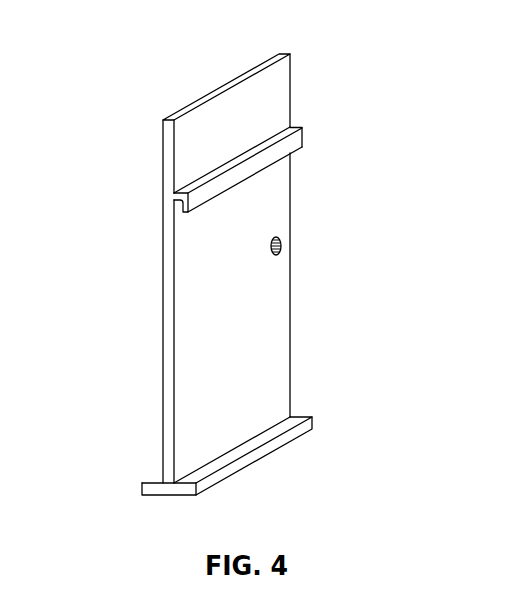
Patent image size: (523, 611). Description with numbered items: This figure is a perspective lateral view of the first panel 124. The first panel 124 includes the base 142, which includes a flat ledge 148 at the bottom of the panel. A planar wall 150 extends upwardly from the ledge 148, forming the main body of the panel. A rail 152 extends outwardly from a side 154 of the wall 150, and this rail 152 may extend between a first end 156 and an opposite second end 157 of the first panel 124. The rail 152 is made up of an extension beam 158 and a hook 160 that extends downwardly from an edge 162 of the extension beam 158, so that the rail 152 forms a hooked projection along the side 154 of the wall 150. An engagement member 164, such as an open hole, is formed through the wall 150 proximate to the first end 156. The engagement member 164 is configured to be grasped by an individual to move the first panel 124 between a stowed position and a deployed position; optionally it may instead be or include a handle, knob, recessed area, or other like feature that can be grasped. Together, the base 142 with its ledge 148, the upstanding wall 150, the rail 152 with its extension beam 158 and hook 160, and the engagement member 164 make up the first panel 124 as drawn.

The first panel 124 is at (144, 99).
The base 142 is at (168, 467).
The flat ledge 148 is at (168, 488).
The planar wall 150 is at (168, 410).
The rail 152 is at (173, 193).
The side 154 is at (188, 245).
The first end 156 is at (290, 168).
The second end 157 is at (167, 226).
The extension beam 158 is at (291, 128).
The hook 160 is at (293, 143).
The edge 162 is at (221, 170).
The engagement member 164 is at (282, 248).